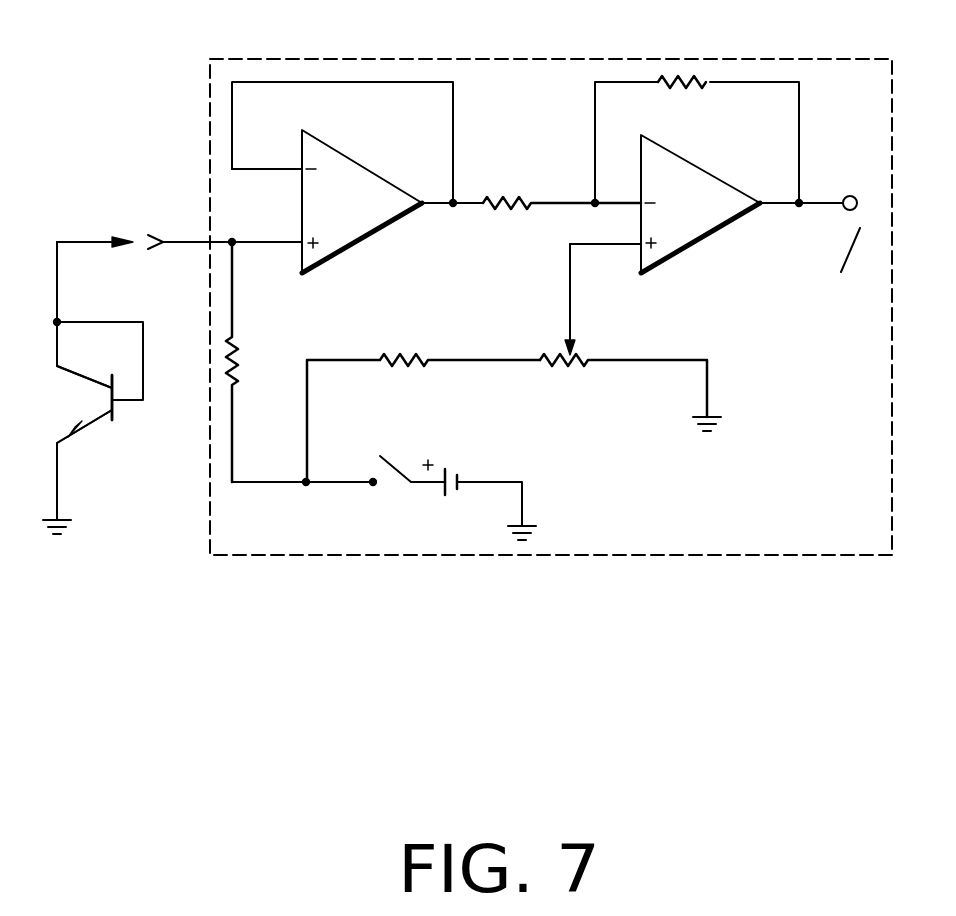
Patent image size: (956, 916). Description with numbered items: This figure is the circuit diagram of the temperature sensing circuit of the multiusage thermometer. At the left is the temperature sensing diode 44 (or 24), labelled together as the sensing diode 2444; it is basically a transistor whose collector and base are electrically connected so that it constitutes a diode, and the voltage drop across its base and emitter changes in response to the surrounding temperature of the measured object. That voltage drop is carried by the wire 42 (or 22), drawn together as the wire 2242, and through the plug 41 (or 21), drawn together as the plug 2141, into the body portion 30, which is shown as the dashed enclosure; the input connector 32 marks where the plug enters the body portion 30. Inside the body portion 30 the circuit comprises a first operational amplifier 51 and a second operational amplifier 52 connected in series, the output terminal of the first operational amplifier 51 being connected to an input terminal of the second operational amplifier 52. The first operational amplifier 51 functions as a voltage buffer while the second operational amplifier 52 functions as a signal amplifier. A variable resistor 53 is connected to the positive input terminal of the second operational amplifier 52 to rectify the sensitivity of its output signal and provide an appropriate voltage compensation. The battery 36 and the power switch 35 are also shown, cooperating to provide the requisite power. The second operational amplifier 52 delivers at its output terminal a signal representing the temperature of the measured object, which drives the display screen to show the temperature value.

The body portion 30 is at (537, 58).
The input line 2141 is at (95, 210).
The plug 21 is at (115, 238).
The plug 41 is at (93, 207).
The input connector 32 is at (155, 238).
The connecting line 2242 is at (107, 304).
The wire 22 is at (57, 290).
The wire 42 is at (107, 304).
The transistor 2444 is at (105, 427).
The temperature sensing diode 24 is at (78, 434).
The temperature sensing diode 44 is at (112, 420).
The first operational amplifier 51 is at (358, 232).
The second operational amplifier 52 is at (697, 232).
The variable resistor 53 is at (588, 354).
The power switch 35 is at (394, 486).
The battery 36 is at (457, 497).